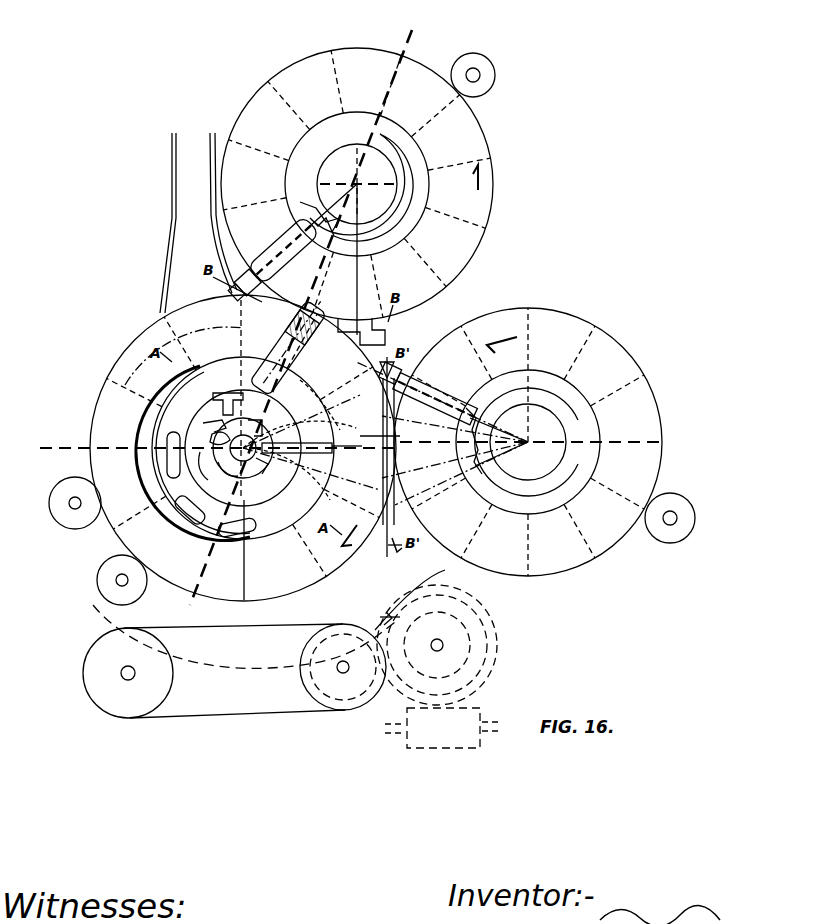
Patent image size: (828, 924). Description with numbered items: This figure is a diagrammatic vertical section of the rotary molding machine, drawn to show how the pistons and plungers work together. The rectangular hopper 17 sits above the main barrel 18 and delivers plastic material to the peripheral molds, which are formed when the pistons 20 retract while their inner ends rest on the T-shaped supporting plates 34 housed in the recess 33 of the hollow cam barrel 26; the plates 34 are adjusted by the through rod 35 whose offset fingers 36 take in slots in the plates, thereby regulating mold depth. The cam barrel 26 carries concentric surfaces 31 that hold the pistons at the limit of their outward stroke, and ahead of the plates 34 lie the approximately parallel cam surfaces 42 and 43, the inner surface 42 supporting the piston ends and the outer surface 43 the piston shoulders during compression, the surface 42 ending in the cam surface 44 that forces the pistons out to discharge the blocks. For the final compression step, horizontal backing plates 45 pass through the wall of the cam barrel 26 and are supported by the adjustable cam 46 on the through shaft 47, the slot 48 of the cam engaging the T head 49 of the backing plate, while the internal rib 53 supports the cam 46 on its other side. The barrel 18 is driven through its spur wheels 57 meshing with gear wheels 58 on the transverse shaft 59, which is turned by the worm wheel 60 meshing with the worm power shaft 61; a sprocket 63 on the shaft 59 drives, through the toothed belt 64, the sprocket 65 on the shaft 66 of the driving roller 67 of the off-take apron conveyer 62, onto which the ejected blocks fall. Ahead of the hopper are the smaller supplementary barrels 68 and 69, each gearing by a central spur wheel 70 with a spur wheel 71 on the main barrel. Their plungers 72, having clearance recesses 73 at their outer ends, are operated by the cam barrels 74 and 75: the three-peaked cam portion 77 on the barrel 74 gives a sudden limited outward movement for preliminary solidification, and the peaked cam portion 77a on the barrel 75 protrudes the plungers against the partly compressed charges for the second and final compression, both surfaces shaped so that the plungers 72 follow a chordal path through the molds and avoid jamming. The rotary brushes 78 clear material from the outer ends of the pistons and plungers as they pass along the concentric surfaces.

The hopper 17 is at (198, 223).
The main barrel 18 is at (243, 448).
The pistons 20 is at (310, 366).
The cam barrel 26 is at (248, 468).
The concentric surfaces 31 is at (185, 500).
The housing recess 33 is at (208, 421).
The T-shaped supporting plates 34 is at (232, 393).
The through rod 35 is at (262, 426).
The offset fingers 36 is at (216, 438).
The inner cam surface 42 is at (360, 412).
The outer cam surface 43 is at (320, 403).
The cam surface 44 is at (312, 478).
The backing plates 45 is at (362, 444).
The cam 46 is at (223, 467).
The through shaft 47 is at (240, 462).
The slot 48 is at (268, 468).
The T head 49 is at (312, 450).
The internal rib 53 is at (198, 466).
The spur wheels 57 is at (243, 672).
The gear wheels 58 is at (492, 644).
The transverse shaft 59 is at (443, 645).
The worm wheel 60 is at (488, 680).
The worm power shaft 61 is at (430, 748).
The off-take apron conveyer 62 is at (262, 625).
The sprocket 63 is at (410, 660).
The toothed belt 64 is at (410, 606).
The sprocket 65 is at (330, 680).
The shaft 66 is at (349, 667).
The driving roller 67 is at (308, 684).
The upper supplementary barrel 68 is at (357, 184).
The lower supplementary barrel 69 is at (528, 442).
The central spur wheel 70 is at (420, 352).
The spur wheel 71 is at (380, 434).
The plungers 72 is at (285, 268).
The clearance recesses 73 is at (245, 260).
The cam barrel 74 is at (420, 185).
The cam barrel 75 is at (581, 428).
The cam portion 77 is at (312, 216).
The peaked cam portion 77a is at (480, 418).
The rotary brushes 78 is at (496, 75).